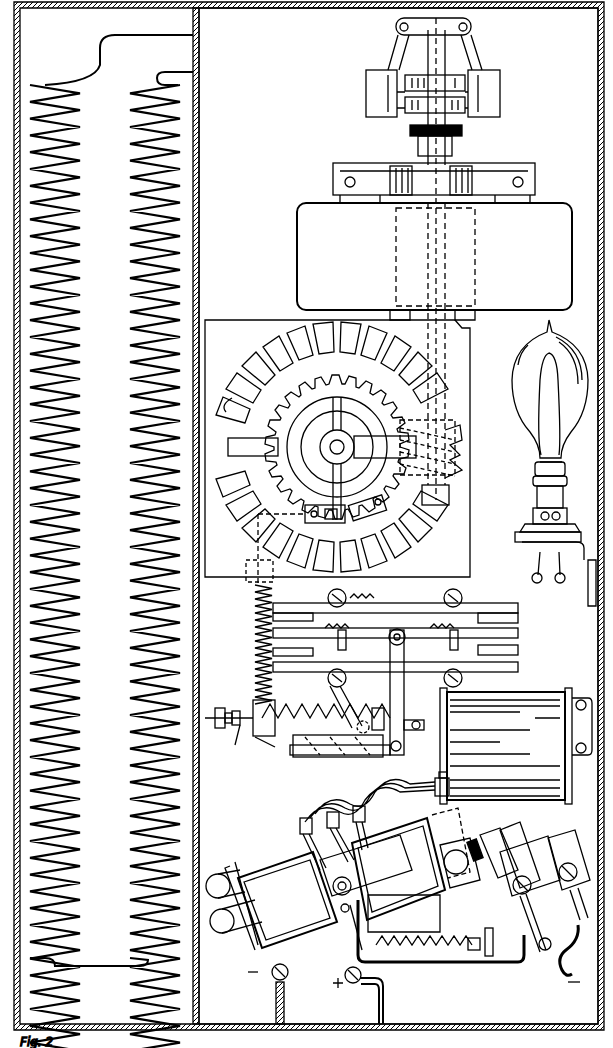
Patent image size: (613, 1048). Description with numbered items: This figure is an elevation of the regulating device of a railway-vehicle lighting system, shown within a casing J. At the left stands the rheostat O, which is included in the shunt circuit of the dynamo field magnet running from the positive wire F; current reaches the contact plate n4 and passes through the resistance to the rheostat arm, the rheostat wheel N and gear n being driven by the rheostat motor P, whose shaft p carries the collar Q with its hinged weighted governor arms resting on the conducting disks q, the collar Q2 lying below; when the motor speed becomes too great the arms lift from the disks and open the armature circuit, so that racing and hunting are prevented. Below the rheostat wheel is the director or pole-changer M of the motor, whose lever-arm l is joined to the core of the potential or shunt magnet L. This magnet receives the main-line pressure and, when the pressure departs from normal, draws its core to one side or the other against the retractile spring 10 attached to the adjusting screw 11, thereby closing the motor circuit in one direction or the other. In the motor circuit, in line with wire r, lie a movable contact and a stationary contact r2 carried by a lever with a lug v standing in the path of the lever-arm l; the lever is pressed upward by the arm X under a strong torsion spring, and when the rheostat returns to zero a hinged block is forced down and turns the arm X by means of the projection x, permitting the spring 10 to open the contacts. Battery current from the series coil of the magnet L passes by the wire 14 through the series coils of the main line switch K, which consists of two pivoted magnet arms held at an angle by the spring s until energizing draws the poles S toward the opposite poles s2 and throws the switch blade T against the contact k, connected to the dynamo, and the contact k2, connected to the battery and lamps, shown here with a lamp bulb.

The casing J is at (258, 9).
The rheostat O is at (127, 398).
The collar Q is at (430, 22).
The governor collar Q2 is at (410, 132).
The stationary conducting disk q is at (437, 80).
The rheostat motor P is at (434, 261).
The motor shaft p is at (440, 236).
The commutator wheel N is at (337, 448).
The gear wheel n is at (340, 447).
The contact plate n4 is at (223, 393).
The projection x is at (295, 537).
The arm X is at (268, 740).
The director or pole-changer M is at (463, 600).
The lever-arm l is at (405, 700).
The wire r is at (326, 707).
The stationary contact r2 is at (305, 757).
The lug v is at (381, 705).
The retractile spring 10 is at (280, 740).
The adjusting screw 11 is at (235, 744).
The wire 14 is at (375, 785).
The potential or shunt magnet L is at (516, 746).
The main line switch K is at (280, 831).
The poles S is at (460, 863).
The spring s is at (434, 939).
The opposite poles s2 is at (440, 845).
The switch blade T is at (482, 840).
The contact k is at (520, 878).
The contact k2 is at (575, 852).
The positive wire F is at (326, 994).
The lamp bulb is at (554, 463).